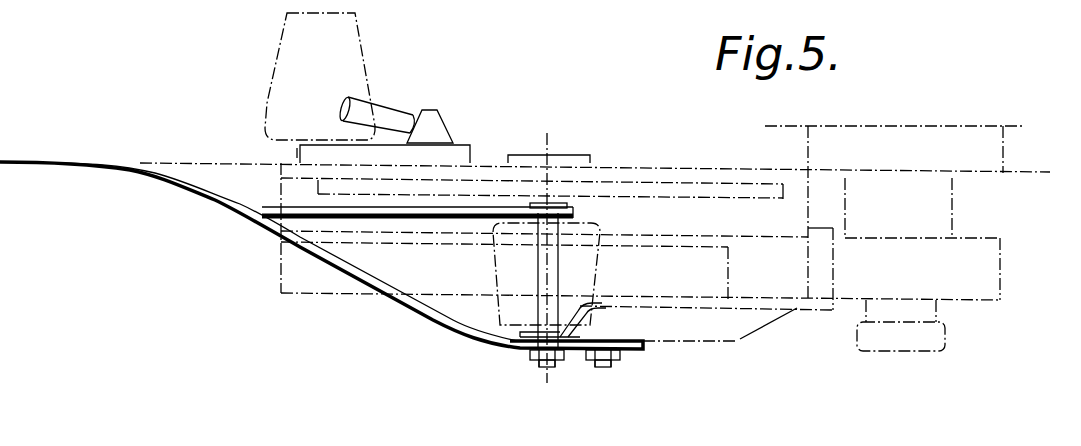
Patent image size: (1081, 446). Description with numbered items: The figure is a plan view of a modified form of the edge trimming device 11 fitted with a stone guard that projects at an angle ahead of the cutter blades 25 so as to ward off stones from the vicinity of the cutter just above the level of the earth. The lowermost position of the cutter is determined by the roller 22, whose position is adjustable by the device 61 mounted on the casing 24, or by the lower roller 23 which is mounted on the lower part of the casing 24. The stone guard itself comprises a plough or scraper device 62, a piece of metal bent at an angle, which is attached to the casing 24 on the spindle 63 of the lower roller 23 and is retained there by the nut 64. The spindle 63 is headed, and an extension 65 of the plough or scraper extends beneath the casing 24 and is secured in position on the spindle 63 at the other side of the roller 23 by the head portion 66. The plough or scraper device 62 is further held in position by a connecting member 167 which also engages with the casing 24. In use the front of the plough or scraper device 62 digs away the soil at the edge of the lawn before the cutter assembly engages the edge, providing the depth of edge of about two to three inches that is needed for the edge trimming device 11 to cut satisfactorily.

The roller 22 is at (290, 58).
The adjusting device 61 is at (492, 113).
The edge trimming device 11 is at (574, 152).
The casing 24 is at (676, 172).
The cutter blades 25 is at (724, 186).
The extension 65 is at (298, 213).
The plough or scraper device 62 is at (208, 196).
The head portion 66 is at (568, 208).
The spindle 63 is at (557, 266).
The lower roller 23 is at (500, 270).
The nut 64 is at (530, 354).
The connecting member 167 is at (620, 358).